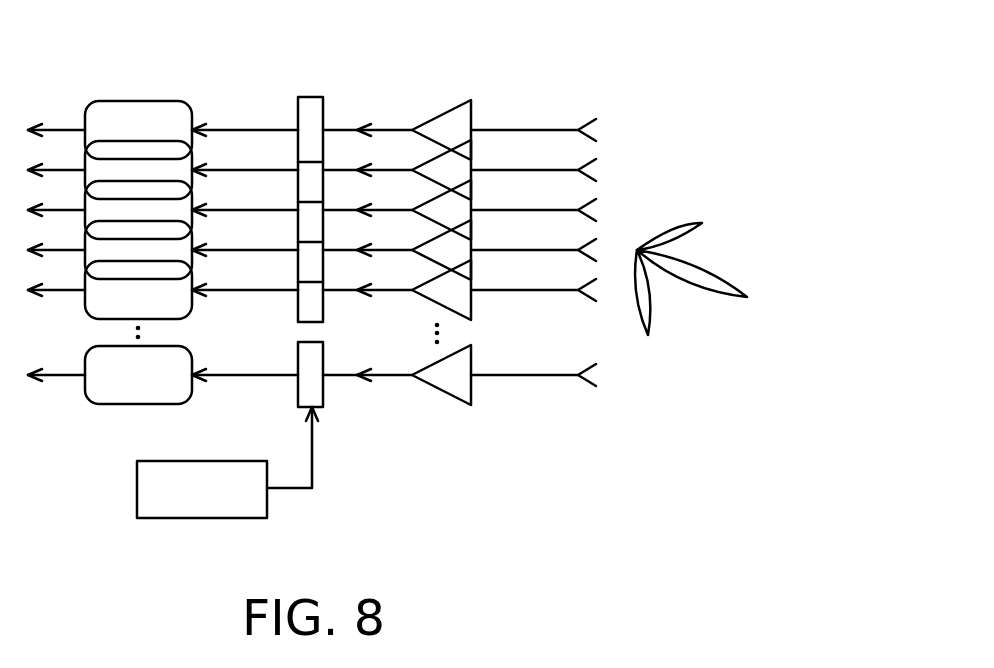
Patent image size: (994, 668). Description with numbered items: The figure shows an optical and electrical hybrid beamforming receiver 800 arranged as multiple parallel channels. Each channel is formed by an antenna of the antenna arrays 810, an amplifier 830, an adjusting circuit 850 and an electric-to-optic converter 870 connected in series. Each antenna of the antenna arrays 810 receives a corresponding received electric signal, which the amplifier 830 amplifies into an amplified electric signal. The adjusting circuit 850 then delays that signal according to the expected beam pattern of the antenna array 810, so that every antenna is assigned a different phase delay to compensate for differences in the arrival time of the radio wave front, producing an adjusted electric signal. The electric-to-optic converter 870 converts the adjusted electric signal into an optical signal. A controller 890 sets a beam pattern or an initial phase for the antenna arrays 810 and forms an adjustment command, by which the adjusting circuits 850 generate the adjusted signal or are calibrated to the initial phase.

The optical and electrical hybrid beamforming receiver 800 is at (615, 540).
The antenna arrays 810 is at (593, 120).
The amplifiers 830 is at (447, 112).
The adjusting circuits 850 is at (312, 97).
The electric-to-optic converters 870 is at (138, 100).
The controller 890 is at (137, 488).